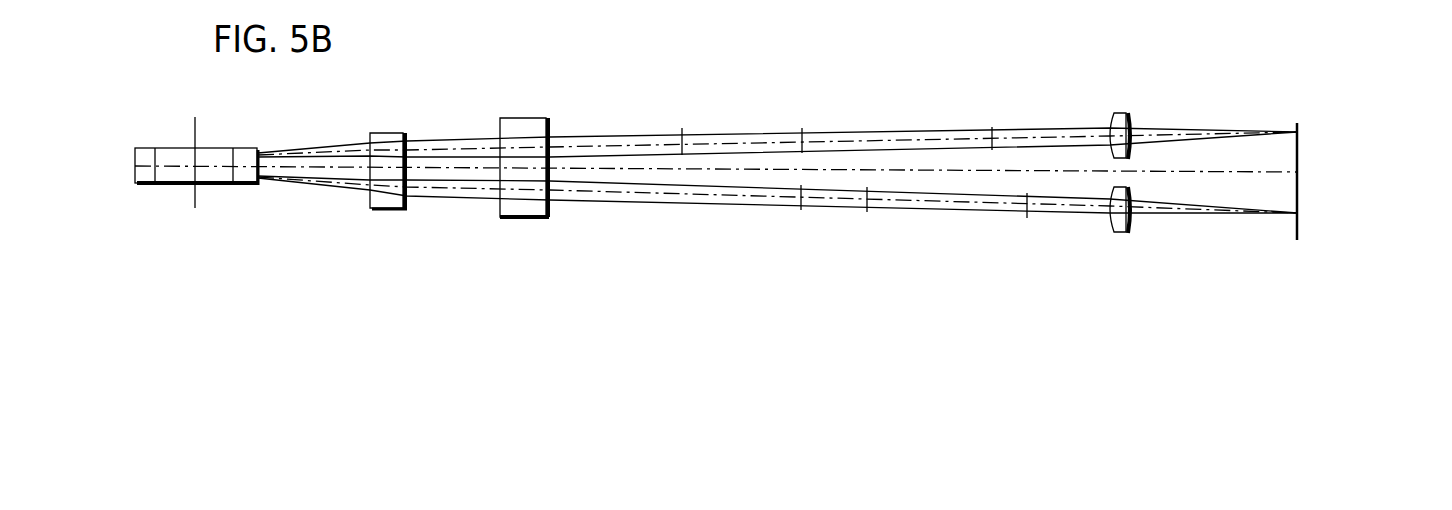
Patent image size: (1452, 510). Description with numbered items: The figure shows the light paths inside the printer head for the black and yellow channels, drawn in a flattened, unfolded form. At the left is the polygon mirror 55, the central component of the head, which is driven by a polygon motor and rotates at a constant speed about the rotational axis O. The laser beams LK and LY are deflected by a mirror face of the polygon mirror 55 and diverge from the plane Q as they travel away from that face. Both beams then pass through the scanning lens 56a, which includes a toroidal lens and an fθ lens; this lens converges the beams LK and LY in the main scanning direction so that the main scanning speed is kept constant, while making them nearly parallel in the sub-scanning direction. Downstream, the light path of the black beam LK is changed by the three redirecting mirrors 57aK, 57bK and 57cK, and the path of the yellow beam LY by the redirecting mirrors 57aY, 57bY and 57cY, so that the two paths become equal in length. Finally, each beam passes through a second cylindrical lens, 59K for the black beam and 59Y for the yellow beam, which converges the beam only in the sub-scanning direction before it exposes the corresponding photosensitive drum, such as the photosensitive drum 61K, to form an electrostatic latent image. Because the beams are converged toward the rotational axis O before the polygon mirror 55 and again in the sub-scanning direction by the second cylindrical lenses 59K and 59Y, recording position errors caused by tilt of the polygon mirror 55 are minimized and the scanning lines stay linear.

The rotational axis O is at (192, 137).
The polygon mirror 55 is at (210, 157).
The scanning lens 56a is at (500, 118).
The laser beam LY is at (268, 150).
The laser beam LK is at (272, 190).
The redirecting mirror 57aY is at (682, 128).
The redirecting mirror 57bY is at (802, 128).
The redirecting mirror 57cY is at (992, 127).
The redirecting mirror 57aK is at (797, 210).
The redirecting mirror 57bK is at (866, 213).
The redirecting mirror 57cK is at (1027, 214).
The plane Q is at (912, 170).
The second cylindrical lens 59Y is at (1135, 78).
The second cylindrical lens 59K is at (1112, 233).
The photosensitive drum 61K is at (1300, 190).